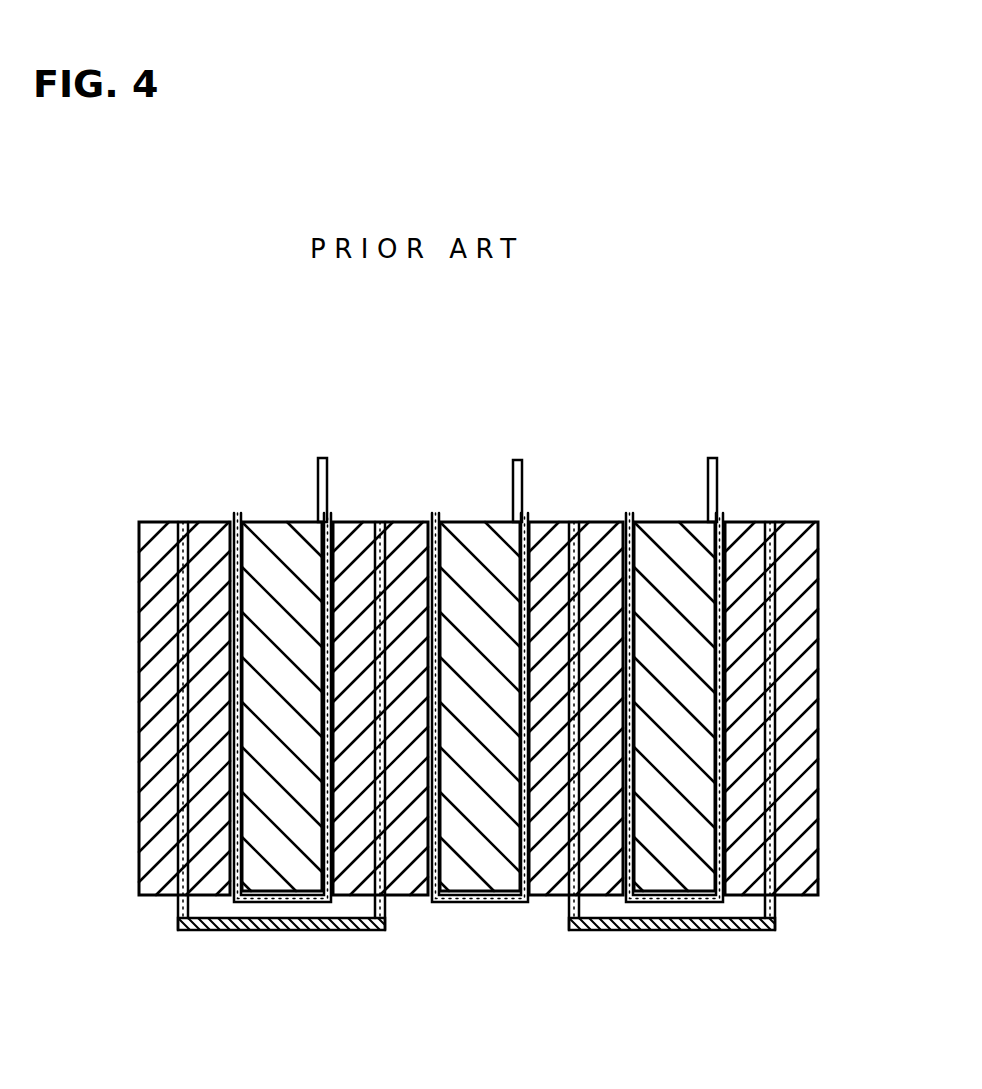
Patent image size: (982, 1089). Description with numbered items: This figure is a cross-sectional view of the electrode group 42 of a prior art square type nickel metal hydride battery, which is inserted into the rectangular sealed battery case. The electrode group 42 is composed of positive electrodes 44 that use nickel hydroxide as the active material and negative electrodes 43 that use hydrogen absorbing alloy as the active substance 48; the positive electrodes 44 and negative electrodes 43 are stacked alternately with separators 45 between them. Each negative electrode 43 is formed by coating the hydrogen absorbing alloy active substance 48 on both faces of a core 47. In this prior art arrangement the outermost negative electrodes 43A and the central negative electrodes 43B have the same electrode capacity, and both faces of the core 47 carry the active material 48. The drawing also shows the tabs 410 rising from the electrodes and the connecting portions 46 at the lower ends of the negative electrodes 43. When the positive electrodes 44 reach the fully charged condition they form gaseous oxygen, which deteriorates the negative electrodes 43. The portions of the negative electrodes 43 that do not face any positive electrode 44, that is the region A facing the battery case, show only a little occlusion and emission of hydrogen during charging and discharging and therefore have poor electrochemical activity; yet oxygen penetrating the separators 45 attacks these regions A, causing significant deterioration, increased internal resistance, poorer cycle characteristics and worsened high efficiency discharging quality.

The electrode group 42 is at (481, 684).
The outermost negative electrode 43A is at (167, 500).
The central negative electrode 43B is at (418, 497).
The negative electrode 43 is at (193, 511).
The positive electrode 44 is at (283, 506).
The separator 45 is at (310, 902).
The connecting portion of current collector 46 is at (237, 946).
The core 47 is at (178, 827).
The active substance 48 is at (160, 882).
The negative electrode lead tab 410 is at (322, 458).
The region facing the battery case A is at (485, 647).